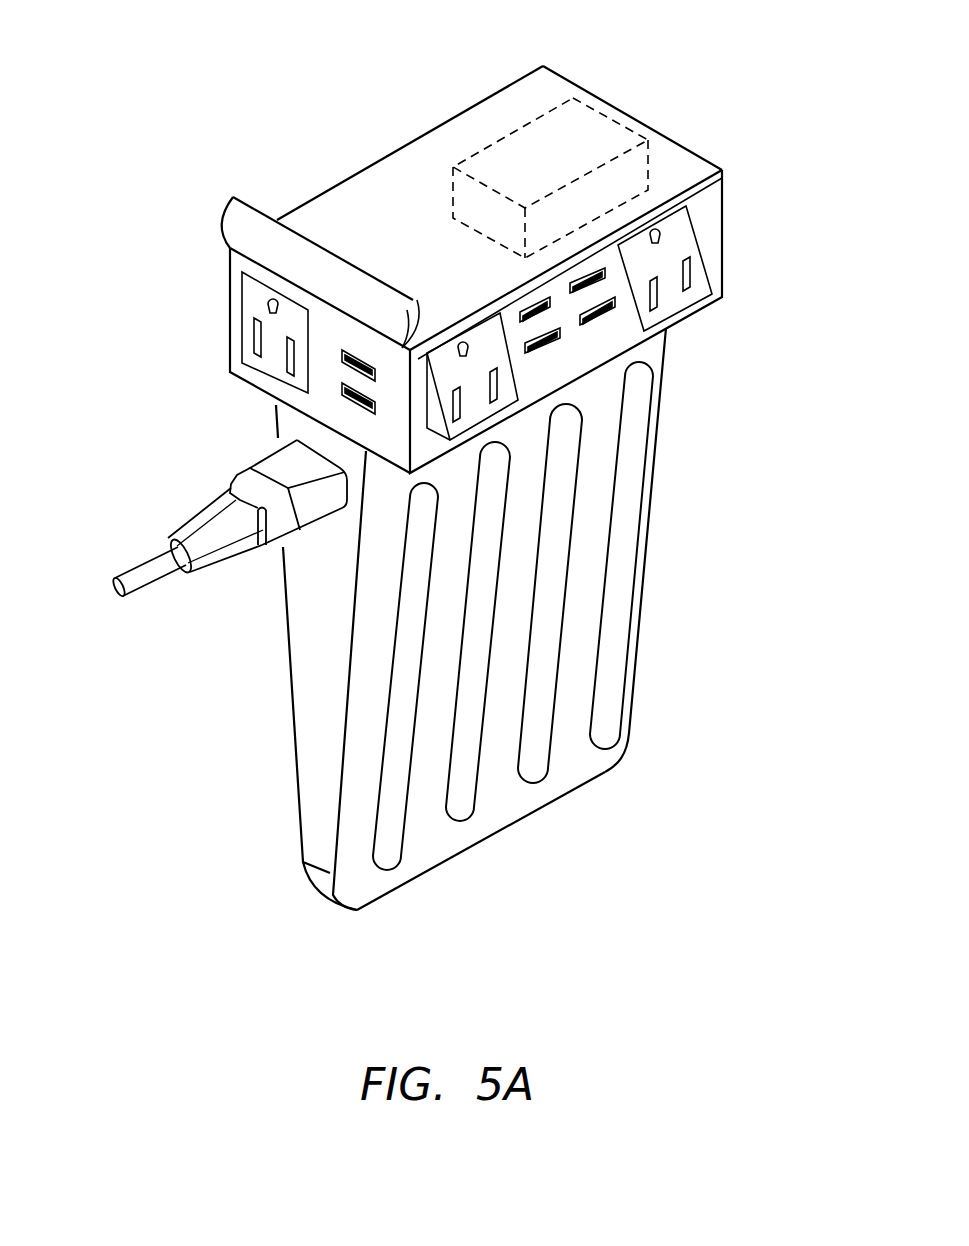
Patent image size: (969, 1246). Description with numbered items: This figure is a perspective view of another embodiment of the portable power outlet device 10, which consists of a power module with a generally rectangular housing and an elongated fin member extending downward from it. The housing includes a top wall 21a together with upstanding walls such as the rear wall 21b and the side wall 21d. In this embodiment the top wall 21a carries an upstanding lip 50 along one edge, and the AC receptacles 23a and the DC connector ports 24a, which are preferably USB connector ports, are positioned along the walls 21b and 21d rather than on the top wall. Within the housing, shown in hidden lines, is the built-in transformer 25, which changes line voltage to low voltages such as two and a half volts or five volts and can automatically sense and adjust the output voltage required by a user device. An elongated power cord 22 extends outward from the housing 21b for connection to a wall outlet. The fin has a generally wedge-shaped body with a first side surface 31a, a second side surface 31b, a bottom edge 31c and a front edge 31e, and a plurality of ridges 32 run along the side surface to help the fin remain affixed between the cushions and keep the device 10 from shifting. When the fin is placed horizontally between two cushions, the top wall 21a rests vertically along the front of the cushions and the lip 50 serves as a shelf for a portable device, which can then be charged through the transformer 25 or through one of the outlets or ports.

The portable power outlet device 10 is at (256, 104).
The upstanding lip 50 is at (253, 222).
The top wall 21a is at (512, 108).
The built-in transformer 25 is at (608, 145).
The side wall 21d is at (705, 232).
The rear wall 21b is at (270, 392).
The AC receptacle 23a is at (247, 309).
The DC connector port 24a is at (347, 366).
The power cord 22 is at (148, 568).
The first side surface 31a is at (578, 609).
The second side surface 31b is at (327, 638).
The bottom edge 31c is at (500, 836).
The front edge 31e is at (647, 558).
The ridges 32 is at (603, 713).